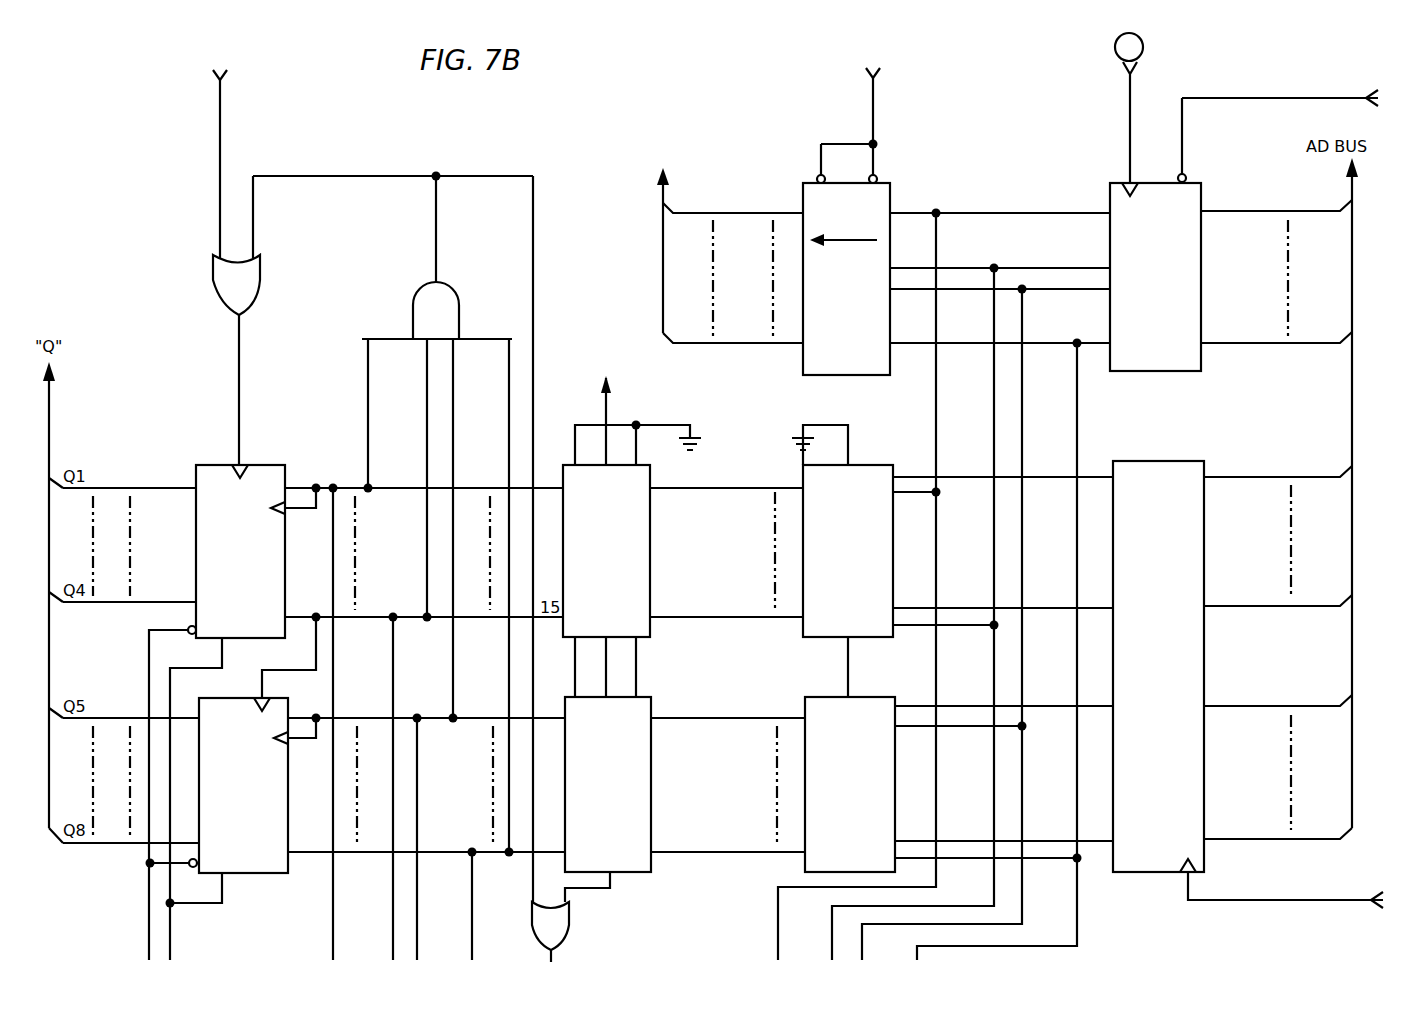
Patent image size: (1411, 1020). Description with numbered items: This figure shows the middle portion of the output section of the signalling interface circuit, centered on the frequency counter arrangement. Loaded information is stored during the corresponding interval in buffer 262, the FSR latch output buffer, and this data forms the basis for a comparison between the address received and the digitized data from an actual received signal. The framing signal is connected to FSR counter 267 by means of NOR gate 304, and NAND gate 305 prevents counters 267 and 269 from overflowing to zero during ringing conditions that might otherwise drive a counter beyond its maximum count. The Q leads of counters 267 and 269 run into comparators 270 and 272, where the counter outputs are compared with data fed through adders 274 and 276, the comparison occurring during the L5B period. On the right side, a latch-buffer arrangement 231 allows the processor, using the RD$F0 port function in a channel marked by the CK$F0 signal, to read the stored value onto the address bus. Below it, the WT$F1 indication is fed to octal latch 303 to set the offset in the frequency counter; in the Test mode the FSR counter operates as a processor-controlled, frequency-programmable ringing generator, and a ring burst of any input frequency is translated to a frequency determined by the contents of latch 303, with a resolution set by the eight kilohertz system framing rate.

The NOR gate 304 is at (262, 292).
The NAND gate 305 is at (480, 274).
The FSR counter 267 is at (268, 462).
The counter 269 is at (268, 875).
The comparator 270 is at (652, 530).
The comparator 272 is at (655, 758).
The adder 274 is at (803, 556).
The adder 276 is at (800, 784).
The buffer 262 is at (832, 376).
The latch-buffer arrangement 231 is at (1205, 360).
The octal latch 303 is at (1205, 552).